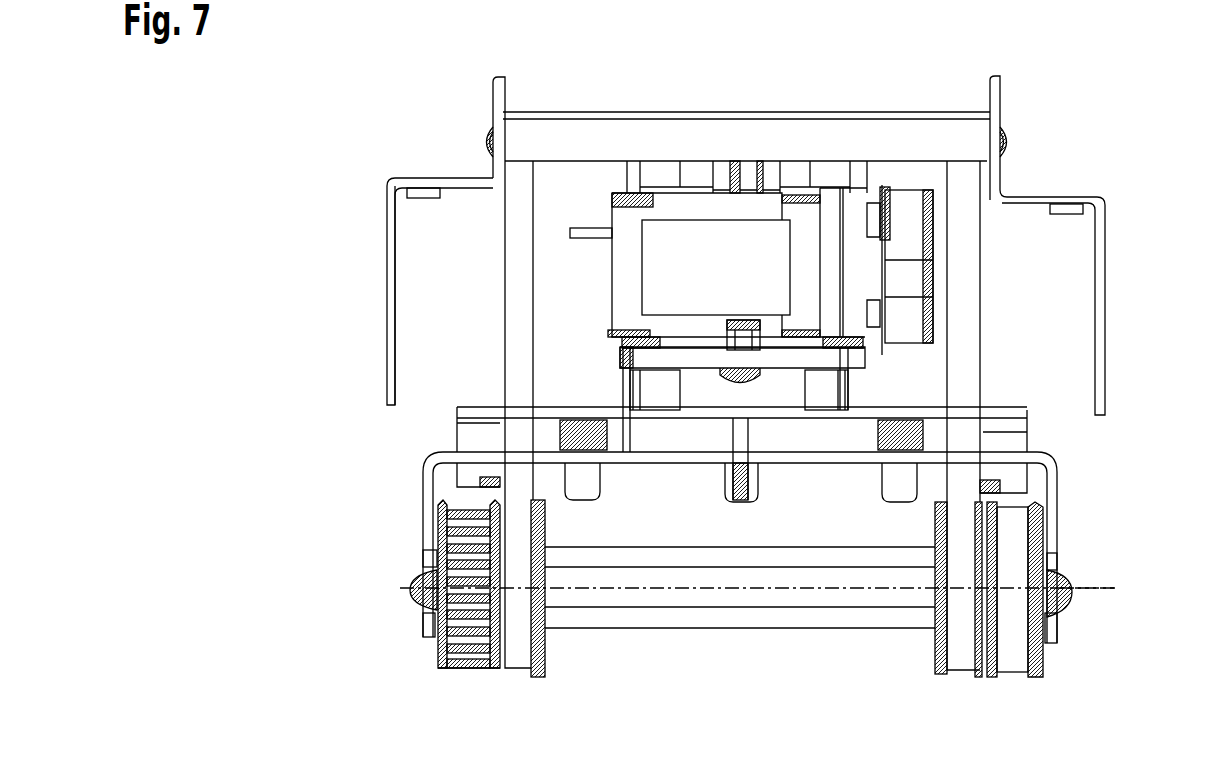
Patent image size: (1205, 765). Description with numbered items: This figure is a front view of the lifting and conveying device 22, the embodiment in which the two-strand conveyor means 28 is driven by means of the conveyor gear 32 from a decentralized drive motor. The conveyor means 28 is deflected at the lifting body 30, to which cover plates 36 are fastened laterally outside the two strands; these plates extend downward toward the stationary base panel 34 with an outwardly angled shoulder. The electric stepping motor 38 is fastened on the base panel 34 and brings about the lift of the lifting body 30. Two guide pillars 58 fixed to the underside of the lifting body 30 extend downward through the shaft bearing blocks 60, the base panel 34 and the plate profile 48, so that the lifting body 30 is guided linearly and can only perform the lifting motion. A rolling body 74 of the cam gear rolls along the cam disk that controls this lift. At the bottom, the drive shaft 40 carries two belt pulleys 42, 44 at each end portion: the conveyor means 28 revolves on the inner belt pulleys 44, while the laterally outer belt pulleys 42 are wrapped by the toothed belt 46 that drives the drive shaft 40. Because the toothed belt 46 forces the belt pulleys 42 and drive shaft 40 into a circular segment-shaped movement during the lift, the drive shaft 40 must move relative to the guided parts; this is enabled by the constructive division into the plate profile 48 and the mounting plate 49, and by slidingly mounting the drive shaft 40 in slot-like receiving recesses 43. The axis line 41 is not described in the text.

The lifting and conveying device 22 is at (310, 121).
The conveyor means 28 is at (522, 312).
The lifting body 30 is at (935, 135).
The conveyor gear 32 is at (1108, 570).
The base panel 34 is at (845, 360).
The cover plate 36 is at (437, 180).
The electric stepping motor 38 is at (662, 264).
The drive shaft 40 is at (728, 592).
The axis of rotation 41 is at (1084, 590).
The belt pulley 42 is at (450, 670).
The receiving recess 43 is at (415, 588).
The belt pulley 44 is at (532, 674).
The toothed belt 46 is at (1010, 652).
The plate profile 48 is at (680, 458).
The mounting plate 49 is at (1015, 415).
The guide pillar 58 is at (662, 178).
The shaft bearing block 60 is at (632, 192).
The rolling body 74 is at (748, 185).